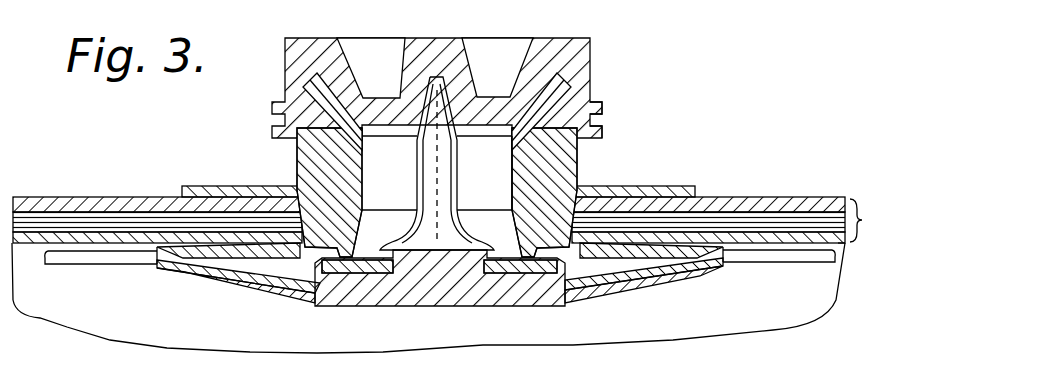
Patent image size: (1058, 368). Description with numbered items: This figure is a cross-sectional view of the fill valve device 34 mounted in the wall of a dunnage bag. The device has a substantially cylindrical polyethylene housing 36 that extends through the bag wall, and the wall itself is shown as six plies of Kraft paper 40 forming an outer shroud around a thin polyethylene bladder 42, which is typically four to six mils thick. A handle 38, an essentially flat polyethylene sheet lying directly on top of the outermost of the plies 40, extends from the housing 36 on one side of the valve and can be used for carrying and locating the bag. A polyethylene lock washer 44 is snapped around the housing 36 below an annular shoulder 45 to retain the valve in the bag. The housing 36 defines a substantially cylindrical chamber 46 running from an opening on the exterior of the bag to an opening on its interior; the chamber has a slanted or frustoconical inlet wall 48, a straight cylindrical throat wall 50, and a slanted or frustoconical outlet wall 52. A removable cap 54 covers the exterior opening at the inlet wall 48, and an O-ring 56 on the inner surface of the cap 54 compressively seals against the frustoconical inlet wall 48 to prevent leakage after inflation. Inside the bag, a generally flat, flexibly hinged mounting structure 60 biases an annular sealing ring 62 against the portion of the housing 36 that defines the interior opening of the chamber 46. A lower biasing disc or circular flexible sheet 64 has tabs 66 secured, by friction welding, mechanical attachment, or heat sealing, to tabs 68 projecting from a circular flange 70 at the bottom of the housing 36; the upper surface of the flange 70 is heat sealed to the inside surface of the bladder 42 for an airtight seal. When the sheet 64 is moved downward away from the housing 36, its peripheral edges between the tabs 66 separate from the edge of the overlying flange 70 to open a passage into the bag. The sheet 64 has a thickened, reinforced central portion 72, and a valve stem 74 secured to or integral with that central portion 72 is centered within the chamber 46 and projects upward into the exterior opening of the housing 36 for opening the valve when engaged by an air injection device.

The fill valve device 34 is at (634, 114).
The housing 36 is at (574, 164).
The handle 38 is at (755, 195).
The plies of Kraft paper 40 is at (862, 220).
The polyethylene bladder 42 is at (845, 247).
The lock washer 44 is at (688, 186).
The annular shoulder 45 is at (596, 187).
The chamber 46 is at (382, 166).
The inlet wall 48 is at (518, 126).
The throat wall 50 is at (512, 196).
The outlet wall 52 is at (518, 230).
The removable cap 54 is at (594, 51).
The O-ring 56 is at (355, 102).
The mounting structure 60 is at (157, 284).
The annular sealing ring 62 is at (533, 273).
The circular flexible sheet 64 is at (607, 282).
The tabs 66 is at (117, 266).
The tabs 68 is at (44, 254).
The circular flange 70 is at (240, 257).
The central portion 72 is at (398, 300).
The valve stem 74 is at (430, 188).